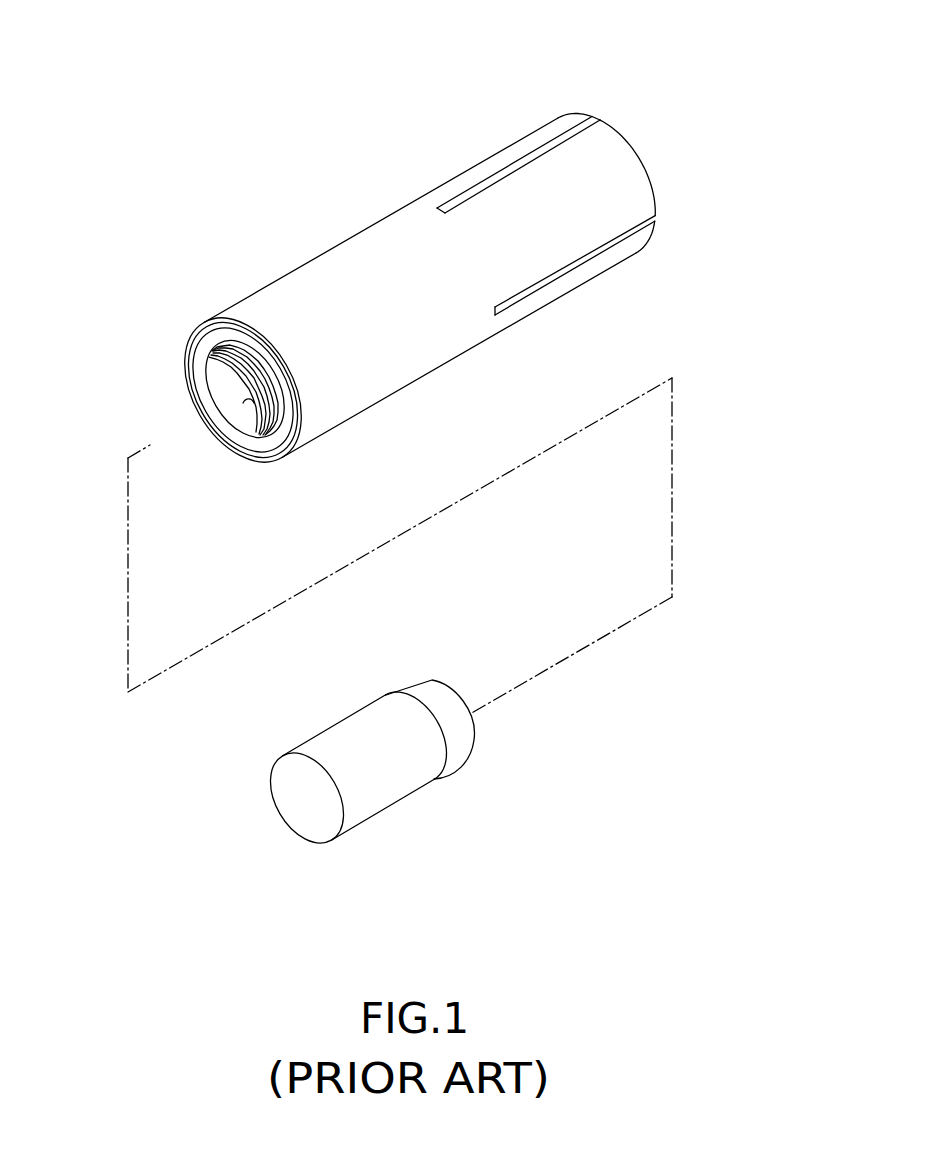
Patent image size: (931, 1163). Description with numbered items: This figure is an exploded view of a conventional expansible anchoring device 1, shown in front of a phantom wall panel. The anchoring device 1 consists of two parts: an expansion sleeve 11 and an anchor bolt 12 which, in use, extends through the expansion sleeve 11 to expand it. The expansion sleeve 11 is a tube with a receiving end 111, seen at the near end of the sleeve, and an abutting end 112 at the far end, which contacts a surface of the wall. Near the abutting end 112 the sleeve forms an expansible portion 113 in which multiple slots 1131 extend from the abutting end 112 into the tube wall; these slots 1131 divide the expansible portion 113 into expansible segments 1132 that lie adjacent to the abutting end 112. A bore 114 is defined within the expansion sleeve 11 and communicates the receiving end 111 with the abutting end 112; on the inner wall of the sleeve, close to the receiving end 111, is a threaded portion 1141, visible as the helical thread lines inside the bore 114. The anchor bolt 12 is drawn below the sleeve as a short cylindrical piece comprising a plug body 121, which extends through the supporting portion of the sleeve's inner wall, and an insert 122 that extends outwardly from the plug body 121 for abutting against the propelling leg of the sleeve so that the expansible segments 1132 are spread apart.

The expansible anchoring device 1 is at (187, 181).
The expansion sleeve 11 is at (339, 237).
The receiving end 111 is at (194, 406).
The abutting end 112 is at (621, 131).
The expansible portion 113 is at (605, 259).
The slots 1131 is at (496, 178).
The expansible segments 1132 is at (623, 196).
The bore 114 is at (239, 372).
The threaded portion 1141 is at (243, 403).
The anchor bolt 12 is at (399, 807).
The plug body 121 is at (364, 790).
The insert 122 is at (455, 738).